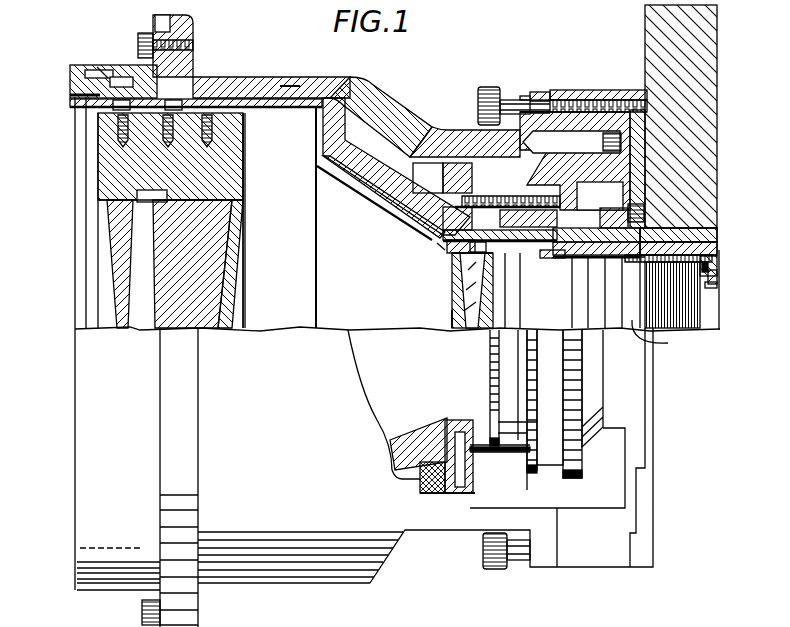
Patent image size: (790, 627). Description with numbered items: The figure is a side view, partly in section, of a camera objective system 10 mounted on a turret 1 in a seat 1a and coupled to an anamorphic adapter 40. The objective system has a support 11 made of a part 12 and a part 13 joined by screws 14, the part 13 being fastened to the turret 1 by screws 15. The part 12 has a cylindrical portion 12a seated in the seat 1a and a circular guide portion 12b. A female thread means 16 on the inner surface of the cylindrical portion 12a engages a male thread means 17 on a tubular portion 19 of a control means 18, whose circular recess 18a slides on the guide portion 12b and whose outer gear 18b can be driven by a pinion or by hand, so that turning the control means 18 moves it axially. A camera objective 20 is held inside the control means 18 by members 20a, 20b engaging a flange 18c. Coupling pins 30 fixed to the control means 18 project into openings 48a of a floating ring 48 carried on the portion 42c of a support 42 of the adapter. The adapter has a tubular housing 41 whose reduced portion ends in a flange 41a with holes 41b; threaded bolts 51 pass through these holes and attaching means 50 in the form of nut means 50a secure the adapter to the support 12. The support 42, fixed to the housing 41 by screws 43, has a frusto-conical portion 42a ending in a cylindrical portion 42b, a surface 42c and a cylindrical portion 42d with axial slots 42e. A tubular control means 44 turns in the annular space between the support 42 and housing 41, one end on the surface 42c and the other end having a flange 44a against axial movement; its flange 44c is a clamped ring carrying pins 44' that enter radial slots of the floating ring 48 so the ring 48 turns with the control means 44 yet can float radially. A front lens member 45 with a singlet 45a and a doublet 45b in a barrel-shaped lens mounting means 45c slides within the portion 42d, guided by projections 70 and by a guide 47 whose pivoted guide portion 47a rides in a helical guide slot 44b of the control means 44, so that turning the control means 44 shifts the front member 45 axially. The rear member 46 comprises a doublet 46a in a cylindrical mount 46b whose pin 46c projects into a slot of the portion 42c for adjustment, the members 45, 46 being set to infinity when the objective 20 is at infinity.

The turret 1 is at (710, 37).
The camera objective system 10 is at (620, 65).
The support 11 is at (627, 97).
The support part 12 is at (587, 70).
The cylindrical portion 12a is at (718, 240).
The circular guide portion 12b is at (617, 215).
The support part 13 is at (640, 173).
The screws 14 is at (645, 143).
The screws 15 is at (690, 213).
The female thread means 16 is at (690, 310).
The male thread means 17 is at (700, 225).
The seat 1a is at (701, 225).
The control means 18 is at (563, 257).
The circular recess 18a is at (555, 258).
The outer gear 18b is at (577, 470).
The flange 18c is at (718, 268).
The tubular portion 19 is at (720, 258).
The camera objective 20 is at (662, 337).
The member 20a is at (643, 265).
The member 20b is at (718, 280).
The coupling pins 30 is at (495, 462).
The anamorphic adapter 40 is at (328, 97).
The housing 41 is at (233, 83).
The flange 41a is at (535, 95).
The holes 41b is at (547, 97).
The support 42 is at (372, 200).
The frusto-conical portion 42a is at (417, 197).
The cylindrical portion 42b is at (444, 251).
The surface 42c is at (427, 230).
The cylindrical portion 42d is at (358, 82).
The slots 42e is at (278, 328).
The screws 43 is at (97, 67).
The control means 44 is at (396, 166).
The pins 44' is at (424, 514).
The flange 44a is at (105, 87).
The helical guide slot 44b is at (303, 62).
The flange 44c is at (420, 487).
The front member 45 is at (100, 193).
The singlet 45a is at (122, 263).
The doublet 45b is at (200, 277).
The lens mounting means 45c is at (108, 173).
The rear member 46 is at (470, 298).
The doublet 46a is at (457, 317).
The cylindrical mount 46b is at (447, 257).
The pin 46c is at (493, 247).
The guide 47 is at (118, 133).
The guide portion 47a is at (125, 106).
The floating ring 48 is at (452, 497).
The openings 48a is at (460, 195).
The attaching means 50 is at (478, 107).
The nut means 50a is at (522, 100).
The threaded bolts 51 is at (595, 93).
The projections 70 is at (533, 626).